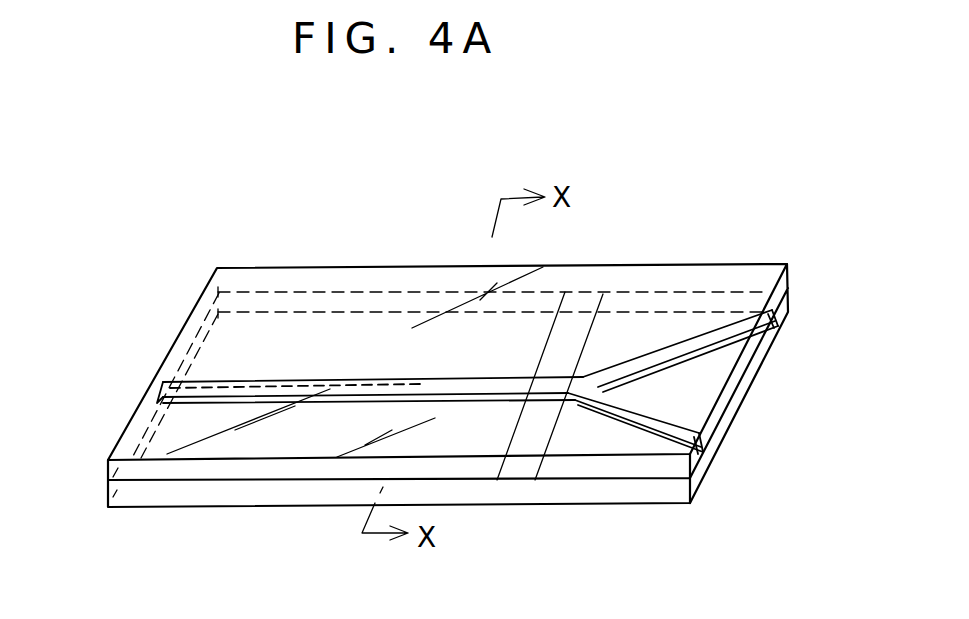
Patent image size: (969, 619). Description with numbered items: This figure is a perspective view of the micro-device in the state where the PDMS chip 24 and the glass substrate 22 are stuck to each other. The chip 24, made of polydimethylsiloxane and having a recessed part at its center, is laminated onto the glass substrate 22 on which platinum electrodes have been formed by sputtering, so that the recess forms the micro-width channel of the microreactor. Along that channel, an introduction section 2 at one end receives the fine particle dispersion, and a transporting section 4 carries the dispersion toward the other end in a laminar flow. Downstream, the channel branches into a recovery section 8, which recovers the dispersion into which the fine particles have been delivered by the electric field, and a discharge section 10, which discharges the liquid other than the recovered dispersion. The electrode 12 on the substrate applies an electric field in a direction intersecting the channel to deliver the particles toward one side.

The introduction section 2 is at (163, 383).
The transporting section 4 is at (357, 378).
The recovery section 8 is at (678, 343).
The discharge section 10 is at (627, 408).
The electrode 12 is at (578, 328).
The glass substrate 22 is at (788, 275).
The chip 24 is at (700, 474).